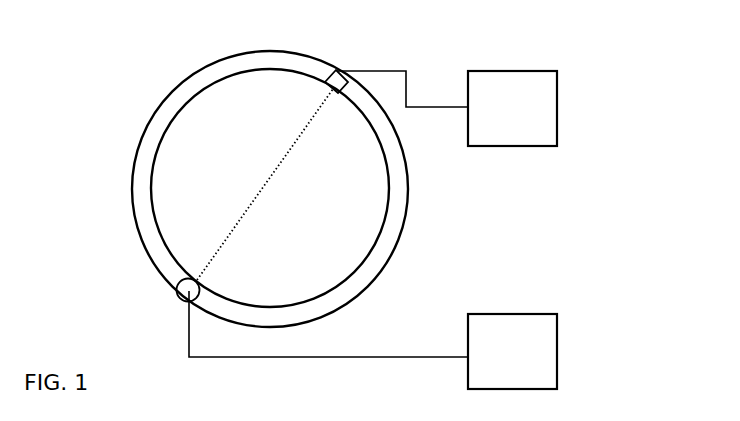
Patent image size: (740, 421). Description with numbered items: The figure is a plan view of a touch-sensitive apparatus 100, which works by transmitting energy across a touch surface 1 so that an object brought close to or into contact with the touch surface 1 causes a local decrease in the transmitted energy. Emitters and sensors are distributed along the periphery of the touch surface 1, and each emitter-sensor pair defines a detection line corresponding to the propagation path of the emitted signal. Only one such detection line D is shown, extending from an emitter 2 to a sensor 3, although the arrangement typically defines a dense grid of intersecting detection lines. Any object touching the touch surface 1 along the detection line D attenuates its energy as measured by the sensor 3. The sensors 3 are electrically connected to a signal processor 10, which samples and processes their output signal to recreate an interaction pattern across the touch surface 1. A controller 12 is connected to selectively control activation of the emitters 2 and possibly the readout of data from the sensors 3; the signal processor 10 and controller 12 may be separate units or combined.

The touch-sensitive apparatus 100 is at (133, 91).
The touch surface 1 is at (358, 225).
The detection line D is at (252, 203).
The sensor 3 is at (337, 71).
The emitter 2 is at (189, 291).
The signal processor 10 is at (557, 87).
The controller 12 is at (557, 343).